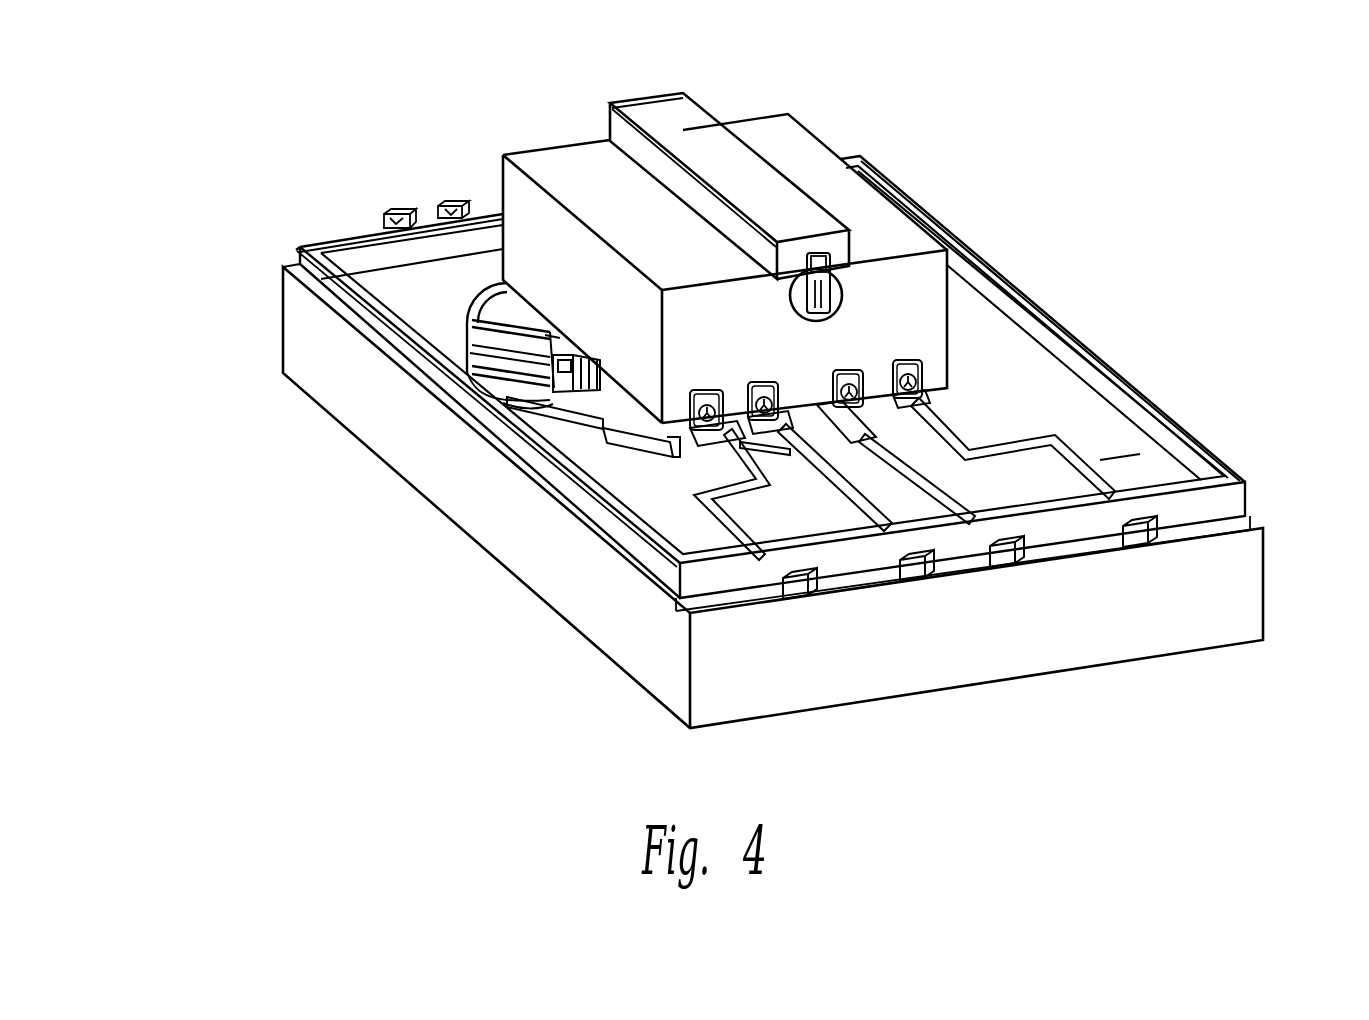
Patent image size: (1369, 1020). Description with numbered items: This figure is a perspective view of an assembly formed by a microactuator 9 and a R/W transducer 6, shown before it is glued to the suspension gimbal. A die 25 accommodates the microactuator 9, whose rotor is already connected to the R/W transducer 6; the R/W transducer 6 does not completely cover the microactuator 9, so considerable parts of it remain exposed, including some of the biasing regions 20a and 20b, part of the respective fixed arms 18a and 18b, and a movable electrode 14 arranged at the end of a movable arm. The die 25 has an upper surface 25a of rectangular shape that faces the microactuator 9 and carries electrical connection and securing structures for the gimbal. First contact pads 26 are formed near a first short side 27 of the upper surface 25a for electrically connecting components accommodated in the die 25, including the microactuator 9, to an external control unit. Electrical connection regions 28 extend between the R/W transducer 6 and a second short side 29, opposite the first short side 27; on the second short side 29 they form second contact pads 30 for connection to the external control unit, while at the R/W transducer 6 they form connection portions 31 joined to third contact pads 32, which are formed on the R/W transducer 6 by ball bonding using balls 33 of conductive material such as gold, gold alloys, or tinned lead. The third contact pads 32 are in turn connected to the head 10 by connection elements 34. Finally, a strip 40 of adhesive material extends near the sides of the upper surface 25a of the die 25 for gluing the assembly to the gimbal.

The R/W transducer 6 is at (818, 121).
The microactuator 9 is at (1022, 385).
The head 10 is at (858, 252).
The movable electrode 14 is at (605, 432).
The fixed arm 18a is at (655, 460).
The fixed arm 18b is at (578, 386).
The biasing region 20a is at (552, 409).
The biasing region 20b is at (660, 447).
The die 25 is at (1243, 622).
The upper surface 25a is at (1115, 452).
The first contact pads 26 is at (450, 203).
The first short side 27 is at (294, 250).
The electrical connection regions 28 is at (1063, 453).
The second short side 29 is at (1247, 520).
The second contact pads 30 is at (1150, 547).
The connection portions 31 is at (701, 437).
The third contact pads 32 is at (852, 380).
The balls 33 is at (932, 362).
The connection elements 34 is at (846, 265).
The strip of adhesive material 40 is at (1193, 458).